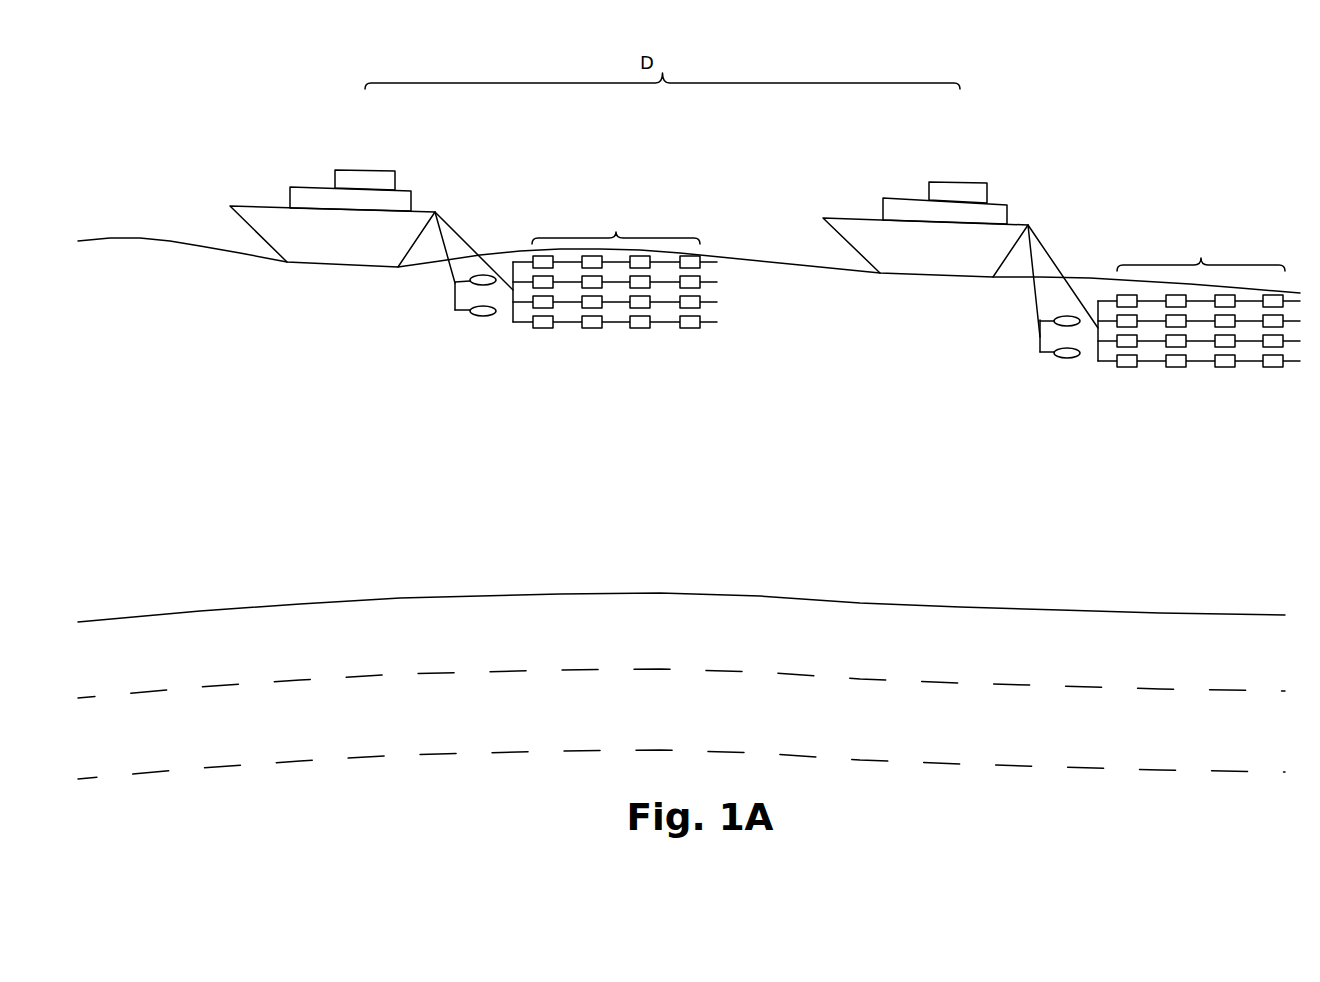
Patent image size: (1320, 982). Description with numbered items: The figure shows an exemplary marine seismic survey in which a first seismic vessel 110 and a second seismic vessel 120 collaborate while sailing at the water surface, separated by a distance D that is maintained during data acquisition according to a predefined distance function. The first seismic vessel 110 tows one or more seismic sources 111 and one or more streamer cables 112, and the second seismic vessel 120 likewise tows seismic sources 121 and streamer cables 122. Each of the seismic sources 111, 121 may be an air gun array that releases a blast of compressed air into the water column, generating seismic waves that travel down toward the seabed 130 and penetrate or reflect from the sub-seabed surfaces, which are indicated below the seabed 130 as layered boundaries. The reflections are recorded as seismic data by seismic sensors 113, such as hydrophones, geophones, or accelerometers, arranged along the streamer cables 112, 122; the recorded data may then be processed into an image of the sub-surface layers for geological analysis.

The first seismic vessel 110 is at (303, 161).
The second seismic vessel 120 is at (887, 166).
The seismic source 111 is at (444, 310).
The seismic source 121 is at (1029, 350).
The streamer cable 112 is at (576, 264).
The streamer cable 122 is at (1164, 296).
The seismic sensor 113 is at (542, 323).
The seabed 130 is at (202, 611).